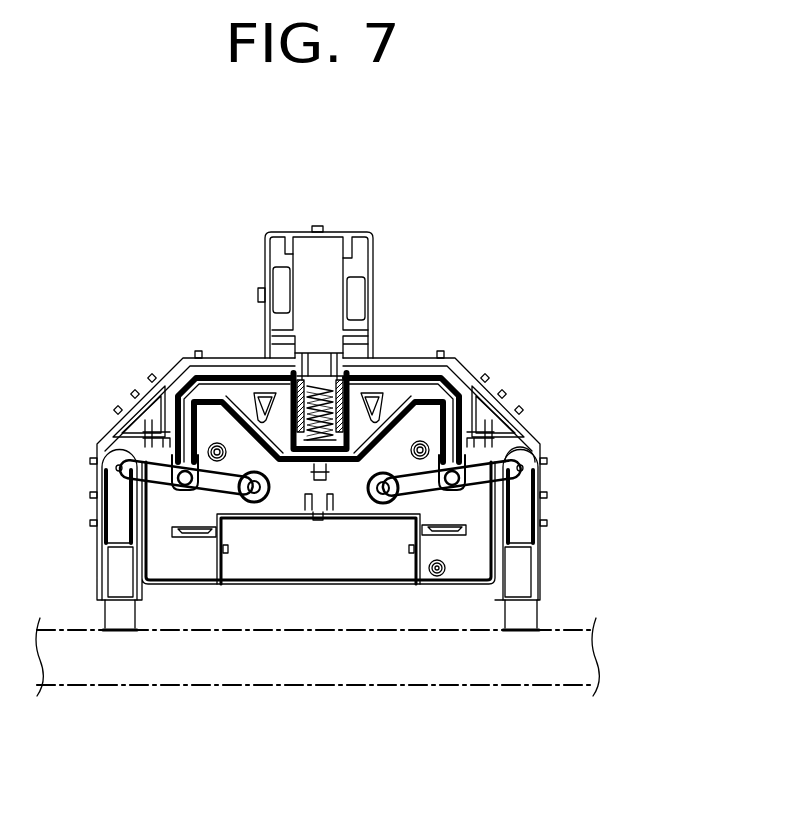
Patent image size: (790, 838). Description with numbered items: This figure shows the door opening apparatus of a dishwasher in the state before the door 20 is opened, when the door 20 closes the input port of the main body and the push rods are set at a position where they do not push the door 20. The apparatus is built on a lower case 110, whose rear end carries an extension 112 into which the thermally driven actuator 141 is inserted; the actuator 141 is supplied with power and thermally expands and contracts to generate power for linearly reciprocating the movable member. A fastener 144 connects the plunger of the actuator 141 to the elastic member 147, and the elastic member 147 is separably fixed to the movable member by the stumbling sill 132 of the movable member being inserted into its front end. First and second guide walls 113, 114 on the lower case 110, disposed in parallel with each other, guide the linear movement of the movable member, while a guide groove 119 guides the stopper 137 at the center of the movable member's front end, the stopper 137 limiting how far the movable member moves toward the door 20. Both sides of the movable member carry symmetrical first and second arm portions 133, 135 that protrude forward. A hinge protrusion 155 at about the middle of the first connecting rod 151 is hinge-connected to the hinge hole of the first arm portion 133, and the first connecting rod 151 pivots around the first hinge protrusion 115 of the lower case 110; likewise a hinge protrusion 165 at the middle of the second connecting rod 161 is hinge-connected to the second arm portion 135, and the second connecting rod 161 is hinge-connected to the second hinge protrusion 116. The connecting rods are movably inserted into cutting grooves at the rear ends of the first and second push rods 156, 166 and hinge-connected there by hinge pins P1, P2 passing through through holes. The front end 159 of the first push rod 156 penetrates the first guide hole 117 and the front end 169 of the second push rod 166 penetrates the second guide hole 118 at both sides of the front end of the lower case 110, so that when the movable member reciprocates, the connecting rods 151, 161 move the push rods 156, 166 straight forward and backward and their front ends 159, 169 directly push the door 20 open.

The door 20 is at (380, 685).
The lower case 110 is at (549, 472).
The extension 112 is at (265, 246).
The first guide wall 113 is at (167, 413).
The second guide wall 114 is at (473, 415).
The first hinge protrusion 115 is at (255, 494).
The second hinge protrusion 116 is at (383, 491).
The first guide hole 117 is at (110, 616).
The second guide hole 118 is at (520, 615).
The guide groove 119 is at (318, 502).
The stumbling sill 132 is at (270, 413).
The first arm portion 133 is at (185, 430).
The second arm portion 135 is at (462, 458).
The stopper 137 is at (303, 482).
The thermally driven actuator 141 is at (318, 245).
The fastener 144 is at (316, 443).
The elastic member 147 is at (352, 392).
The first connecting rod 151 is at (152, 478).
The hinge protrusion 155 is at (162, 460).
The first push rod 156 is at (115, 508).
The front end of the first push rod 159 is at (118, 630).
The second connecting rod 161 is at (413, 483).
The hinge protrusion 165 is at (521, 466).
The second push rod 166 is at (523, 530).
The front end of the second push rod 169 is at (520, 630).
The hinge pin P1 is at (116, 453).
The hinge pin P2 is at (527, 457).